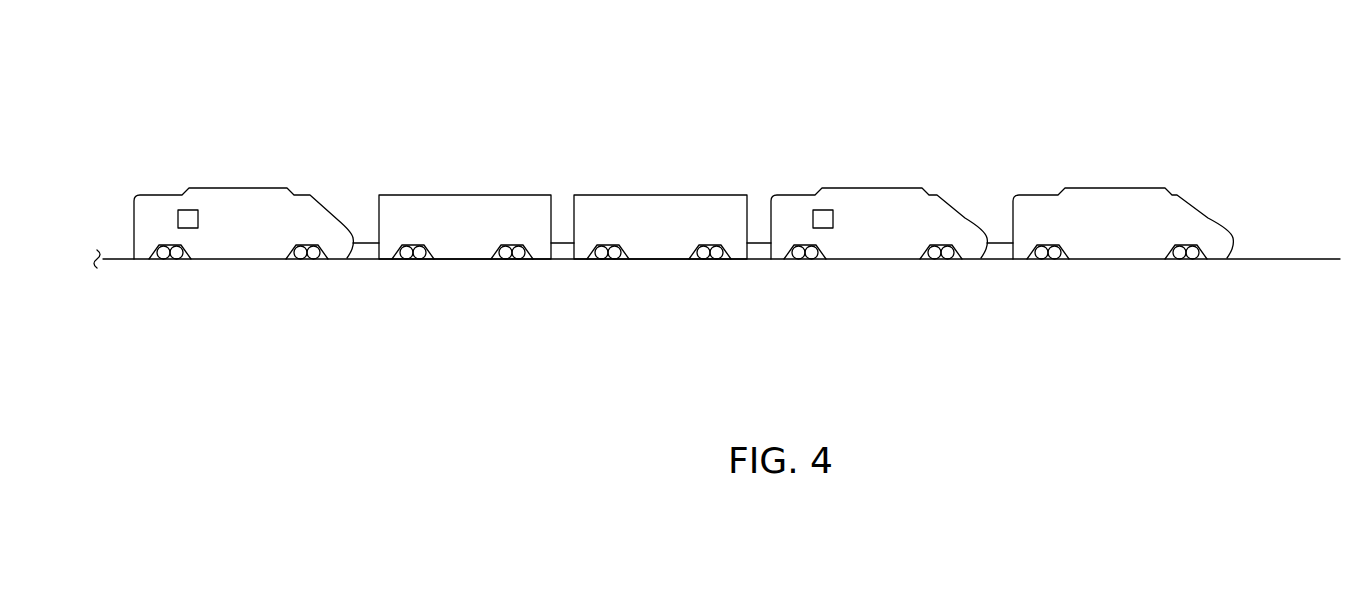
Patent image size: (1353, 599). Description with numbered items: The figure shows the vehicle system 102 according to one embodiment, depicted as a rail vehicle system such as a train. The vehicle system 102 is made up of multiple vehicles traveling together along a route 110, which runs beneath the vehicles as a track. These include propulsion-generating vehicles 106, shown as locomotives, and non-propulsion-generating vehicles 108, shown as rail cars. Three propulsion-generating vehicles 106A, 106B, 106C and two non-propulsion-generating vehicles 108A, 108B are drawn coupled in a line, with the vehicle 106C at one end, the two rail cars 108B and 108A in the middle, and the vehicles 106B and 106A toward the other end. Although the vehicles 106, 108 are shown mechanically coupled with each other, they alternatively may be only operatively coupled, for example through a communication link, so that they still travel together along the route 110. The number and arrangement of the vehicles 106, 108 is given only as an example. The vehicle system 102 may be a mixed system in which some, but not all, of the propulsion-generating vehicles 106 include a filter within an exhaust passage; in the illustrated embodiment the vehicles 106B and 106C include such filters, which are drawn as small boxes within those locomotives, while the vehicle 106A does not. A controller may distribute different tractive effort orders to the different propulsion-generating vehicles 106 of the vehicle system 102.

The vehicle system 102 is at (1233, 302).
The propulsion-generating vehicles 106 is at (1197, 186).
The propulsion-generating vehicle 106A is at (1113, 188).
The propulsion-generating vehicle 106B is at (879, 185).
The propulsion-generating vehicle 106C is at (243, 185).
The non-propulsion-generating vehicles 108 is at (740, 183).
The non-propulsion-generating vehicle 108A is at (660, 195).
The non-propulsion-generating vehicle 108B is at (463, 195).
The route 110 is at (1293, 258).